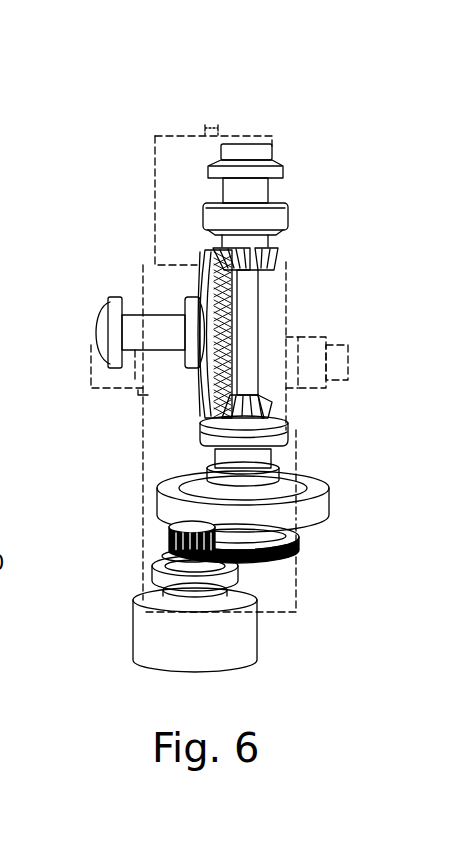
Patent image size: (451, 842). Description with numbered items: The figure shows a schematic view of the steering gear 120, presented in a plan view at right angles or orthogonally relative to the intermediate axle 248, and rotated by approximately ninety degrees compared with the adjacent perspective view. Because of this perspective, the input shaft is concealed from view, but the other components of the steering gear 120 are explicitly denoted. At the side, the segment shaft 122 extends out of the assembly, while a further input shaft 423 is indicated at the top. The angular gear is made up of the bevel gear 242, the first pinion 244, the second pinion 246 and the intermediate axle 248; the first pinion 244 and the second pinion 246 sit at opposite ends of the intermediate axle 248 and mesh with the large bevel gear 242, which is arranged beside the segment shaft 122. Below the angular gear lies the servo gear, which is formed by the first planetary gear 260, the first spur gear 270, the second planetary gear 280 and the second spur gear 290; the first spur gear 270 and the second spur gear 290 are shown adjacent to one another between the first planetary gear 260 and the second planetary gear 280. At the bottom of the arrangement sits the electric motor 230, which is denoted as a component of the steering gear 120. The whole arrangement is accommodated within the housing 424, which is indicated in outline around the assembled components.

The steering gear 120 is at (150, 120).
The further input shaft 423 is at (211, 125).
The segment shaft 122 is at (143, 315).
The first pinion 244 is at (278, 262).
The intermediate axle 248 is at (262, 332).
The bevel gear 242 is at (190, 402).
The second pinion 246 is at (275, 404).
The first planetary gear 260 is at (330, 518).
The first spur gear 270 is at (295, 557).
The second spur gear 290 is at (298, 558).
The second planetary gear 280 is at (142, 577).
The electric motor 230 is at (130, 641).
The housing 424 is at (272, 600).